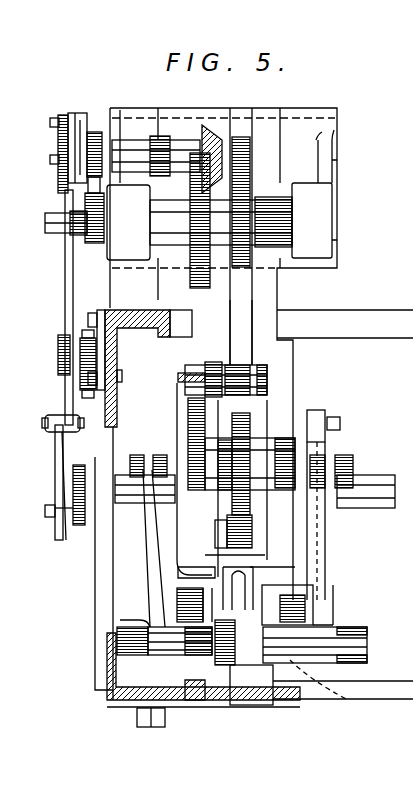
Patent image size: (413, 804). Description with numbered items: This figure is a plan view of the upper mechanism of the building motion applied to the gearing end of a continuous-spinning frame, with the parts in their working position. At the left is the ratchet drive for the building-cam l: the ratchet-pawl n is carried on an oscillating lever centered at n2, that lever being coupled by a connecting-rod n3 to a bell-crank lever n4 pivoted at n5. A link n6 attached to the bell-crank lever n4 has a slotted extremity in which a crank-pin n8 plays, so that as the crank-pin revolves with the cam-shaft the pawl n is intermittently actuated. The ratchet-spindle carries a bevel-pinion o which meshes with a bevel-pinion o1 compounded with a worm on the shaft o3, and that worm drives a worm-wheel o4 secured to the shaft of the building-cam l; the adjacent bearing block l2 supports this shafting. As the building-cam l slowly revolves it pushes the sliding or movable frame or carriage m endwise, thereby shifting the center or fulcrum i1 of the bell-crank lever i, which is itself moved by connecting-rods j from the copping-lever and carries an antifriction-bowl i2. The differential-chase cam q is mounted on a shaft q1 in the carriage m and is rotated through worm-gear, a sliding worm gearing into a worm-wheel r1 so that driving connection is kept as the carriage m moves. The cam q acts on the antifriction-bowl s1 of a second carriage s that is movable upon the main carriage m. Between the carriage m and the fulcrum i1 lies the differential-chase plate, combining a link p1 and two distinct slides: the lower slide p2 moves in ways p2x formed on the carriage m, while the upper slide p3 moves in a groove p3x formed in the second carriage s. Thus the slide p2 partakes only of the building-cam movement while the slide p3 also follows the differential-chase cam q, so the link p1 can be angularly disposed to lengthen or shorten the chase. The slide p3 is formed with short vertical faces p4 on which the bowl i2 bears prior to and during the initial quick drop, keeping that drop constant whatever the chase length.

The ratchet-pawl n is at (78, 112).
The center of oscillating lever n2 is at (94, 130).
The connecting-rod n3 is at (68, 278).
The bell-crank lever n4 is at (64, 400).
The pivot of bell-crank lever n5 is at (58, 356).
The link n6 is at (60, 465).
The crank-pin n8 is at (48, 518).
The bevel-pinion o is at (176, 135).
The bevel-pinion o1 is at (213, 178).
The shaft o3 is at (205, 328).
The worm-wheel o4 is at (208, 212).
The building-cam l is at (245, 278).
The bearing block l2 is at (312, 222).
The sliding or movable frame or carriage m is at (240, 387).
The worm-wheel r1 is at (190, 462).
The connecting-rods j is at (143, 465).
The differential-chase cam q is at (252, 433).
The shaft q1 is at (400, 455).
The second carriage s is at (213, 538).
The antifriction-bowl s1 is at (245, 532).
The groove or way p3x is at (290, 566).
The slide p3 is at (258, 590).
The ways or grooves p2x is at (190, 570).
The slide p2 is at (132, 650).
The link p1 is at (195, 615).
The short vertical faces p4 is at (262, 640).
The bell-crank lever i is at (327, 620).
The center or fulcrum i1 is at (332, 696).
The antifriction-bowl i2 is at (233, 632).